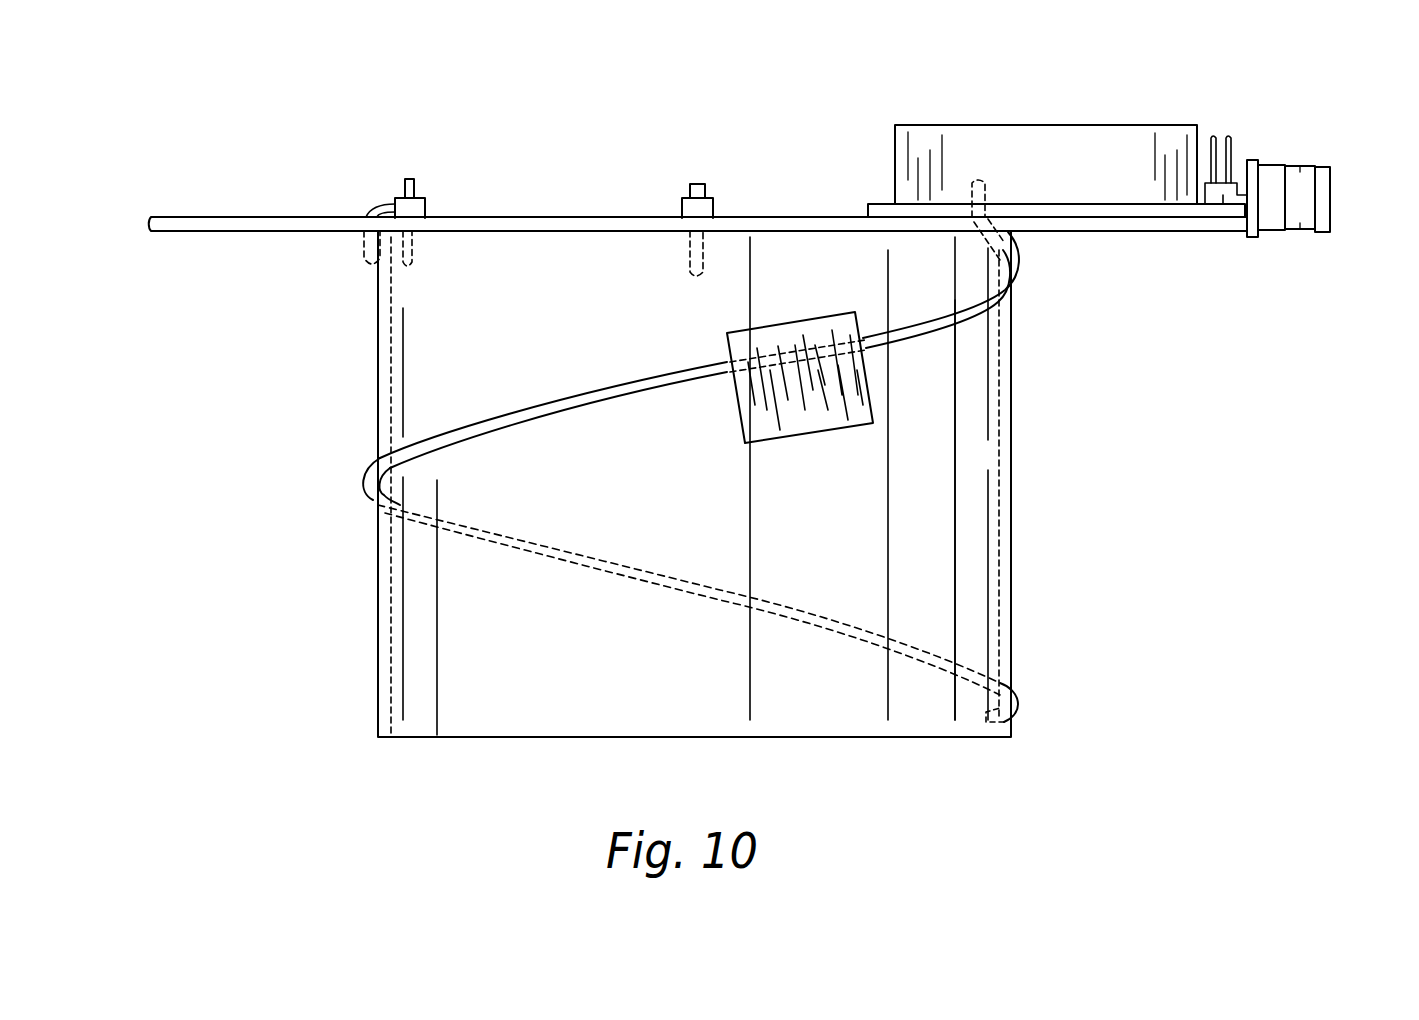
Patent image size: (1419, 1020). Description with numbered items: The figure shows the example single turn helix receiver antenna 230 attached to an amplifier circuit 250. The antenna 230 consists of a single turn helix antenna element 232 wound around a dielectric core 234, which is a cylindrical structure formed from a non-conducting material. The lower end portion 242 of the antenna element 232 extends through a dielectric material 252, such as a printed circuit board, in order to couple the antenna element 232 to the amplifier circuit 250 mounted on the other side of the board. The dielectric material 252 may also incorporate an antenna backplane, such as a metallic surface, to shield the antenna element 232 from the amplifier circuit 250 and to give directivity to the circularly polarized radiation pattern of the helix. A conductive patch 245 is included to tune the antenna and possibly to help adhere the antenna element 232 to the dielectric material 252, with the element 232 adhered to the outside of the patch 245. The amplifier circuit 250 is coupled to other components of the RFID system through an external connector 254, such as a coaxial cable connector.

The receiver antenna 230 is at (1030, 408).
The single turn helix antenna element 232 is at (614, 383).
The dielectric core 234 is at (931, 487).
The lower end portion 242 is at (1012, 718).
The conductive patch 245 is at (765, 400).
The amplifier circuit 250 is at (1062, 128).
The dielectric material 252 is at (540, 217).
The external connector 254 is at (1320, 167).